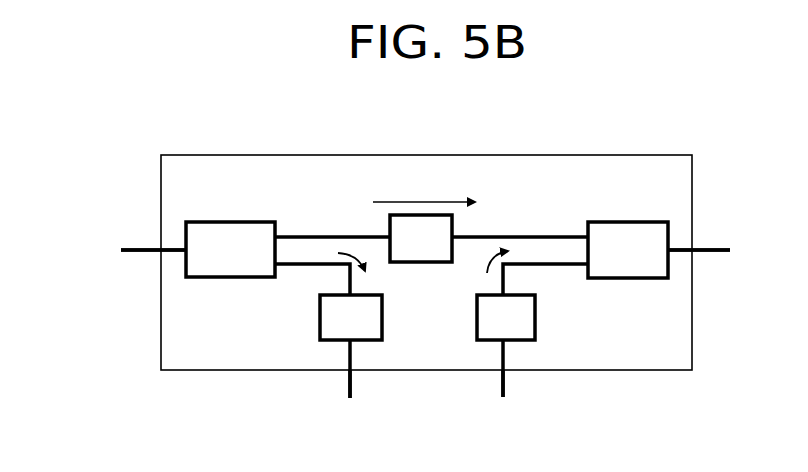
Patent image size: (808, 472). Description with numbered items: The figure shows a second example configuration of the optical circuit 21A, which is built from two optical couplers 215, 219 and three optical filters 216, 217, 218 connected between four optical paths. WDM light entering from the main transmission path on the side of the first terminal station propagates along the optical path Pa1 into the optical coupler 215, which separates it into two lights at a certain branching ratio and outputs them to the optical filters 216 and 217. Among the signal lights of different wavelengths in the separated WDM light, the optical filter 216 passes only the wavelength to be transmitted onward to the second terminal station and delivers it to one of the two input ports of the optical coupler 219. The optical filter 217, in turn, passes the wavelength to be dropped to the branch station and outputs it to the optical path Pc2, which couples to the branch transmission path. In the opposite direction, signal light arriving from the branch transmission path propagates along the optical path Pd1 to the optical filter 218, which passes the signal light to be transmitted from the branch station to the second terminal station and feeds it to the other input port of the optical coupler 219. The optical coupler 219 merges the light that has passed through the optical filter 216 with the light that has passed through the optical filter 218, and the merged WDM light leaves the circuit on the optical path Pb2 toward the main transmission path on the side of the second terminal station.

The optical circuit 21A is at (287, 155).
The optical coupler 215 is at (228, 222).
The optical filter 216 is at (420, 262).
The optical filter 217 is at (320, 320).
The optical filter 218 is at (535, 315).
The optical coupler 219 is at (617, 222).
The optical path Pa1 is at (143, 249).
The optical path Pb2 is at (710, 250).
The optical path Pc2 is at (348, 386).
The optical path Pd1 is at (505, 385).